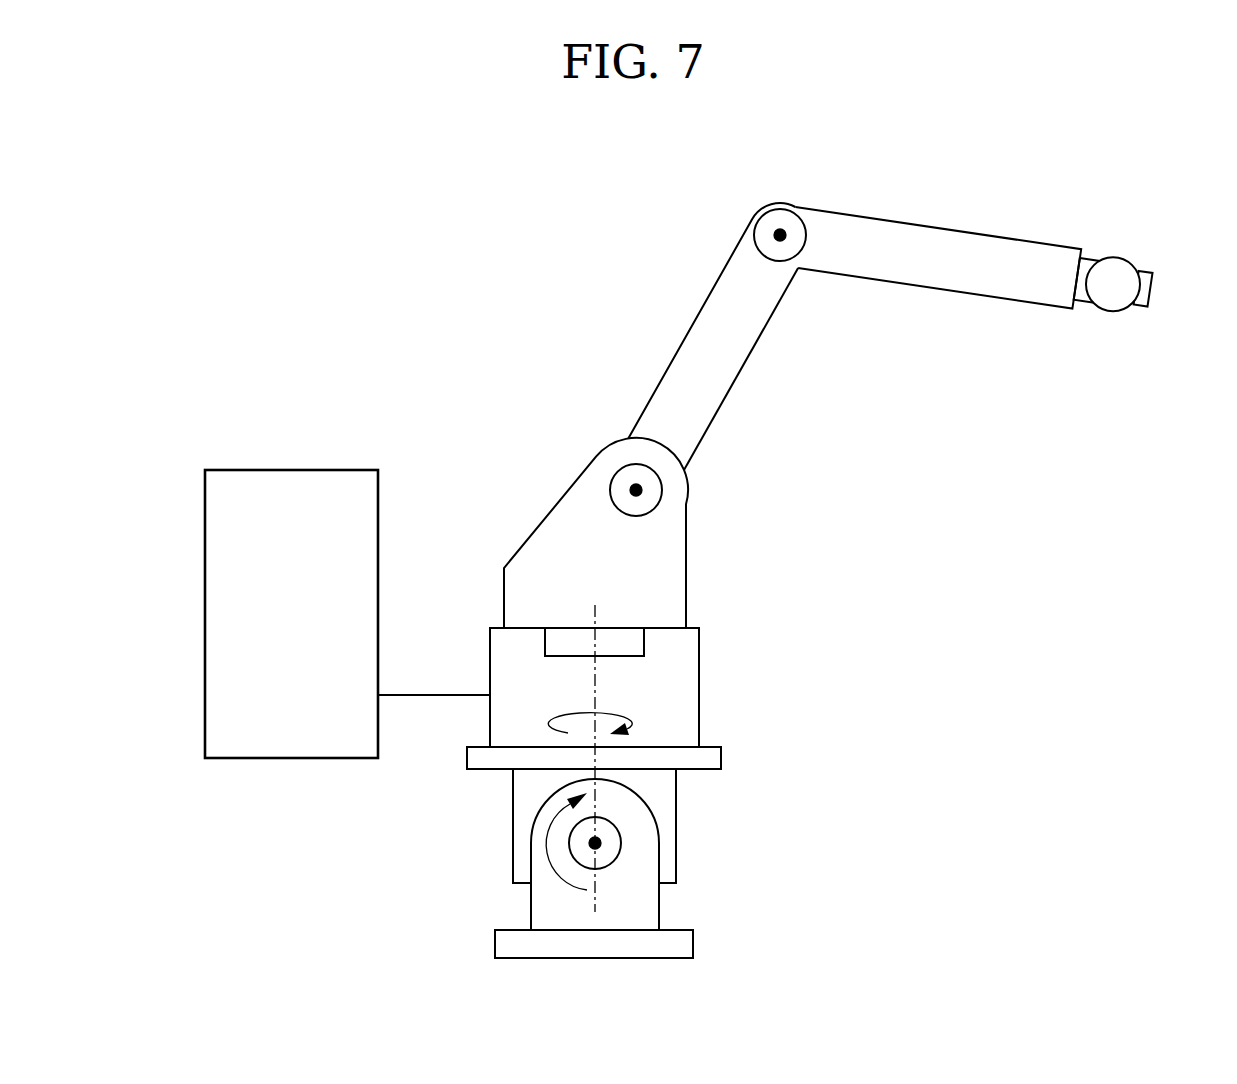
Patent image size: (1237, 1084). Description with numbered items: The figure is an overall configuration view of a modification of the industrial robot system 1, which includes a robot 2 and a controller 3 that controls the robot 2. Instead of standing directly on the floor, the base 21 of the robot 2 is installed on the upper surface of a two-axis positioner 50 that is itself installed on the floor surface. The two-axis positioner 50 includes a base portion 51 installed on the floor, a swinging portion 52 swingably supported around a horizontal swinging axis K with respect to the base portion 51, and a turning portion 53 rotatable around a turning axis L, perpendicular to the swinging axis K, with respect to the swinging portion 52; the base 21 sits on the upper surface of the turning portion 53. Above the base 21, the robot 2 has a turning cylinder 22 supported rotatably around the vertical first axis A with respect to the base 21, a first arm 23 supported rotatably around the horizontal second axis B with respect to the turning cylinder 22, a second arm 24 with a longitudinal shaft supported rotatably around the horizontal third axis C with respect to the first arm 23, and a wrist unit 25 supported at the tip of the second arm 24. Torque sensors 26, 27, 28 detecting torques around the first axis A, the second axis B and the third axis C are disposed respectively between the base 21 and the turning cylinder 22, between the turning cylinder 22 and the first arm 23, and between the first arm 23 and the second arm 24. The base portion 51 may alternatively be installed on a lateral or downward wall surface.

The industrial robot system 1 is at (703, 522).
The robot 2 is at (838, 513).
The controller 3 is at (347, 557).
The base 21 is at (641, 744).
The turning cylinder 22 is at (647, 512).
The first arm 23 is at (736, 292).
The second arm 24 is at (998, 312).
The wrist unit 25 is at (1137, 330).
The torque sensor 26 is at (652, 641).
The torque sensor 27 is at (641, 456).
The torque sensor 28 is at (749, 188).
The two-axis positioner 50 is at (596, 849).
The base portion 51 is at (632, 868).
The swinging portion 52 is at (646, 826).
The turning portion 53 is at (644, 757).
The first axis A is at (535, 744).
The second axis B is at (683, 489).
The third axis C is at (739, 224).
The swinging axis K is at (625, 841).
The turning axis L is at (545, 911).